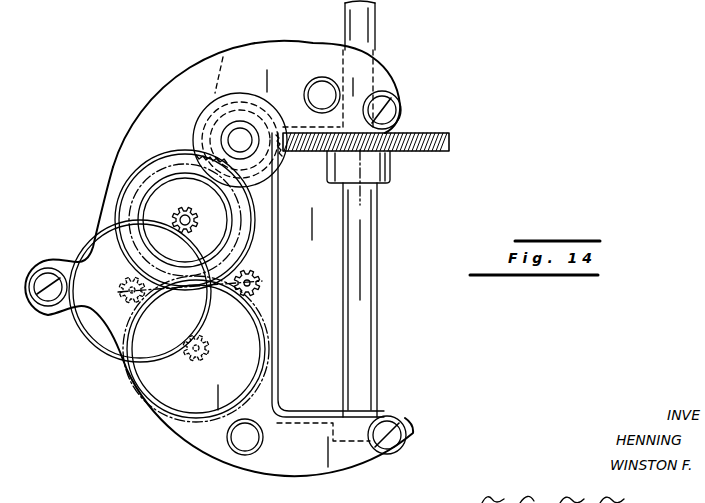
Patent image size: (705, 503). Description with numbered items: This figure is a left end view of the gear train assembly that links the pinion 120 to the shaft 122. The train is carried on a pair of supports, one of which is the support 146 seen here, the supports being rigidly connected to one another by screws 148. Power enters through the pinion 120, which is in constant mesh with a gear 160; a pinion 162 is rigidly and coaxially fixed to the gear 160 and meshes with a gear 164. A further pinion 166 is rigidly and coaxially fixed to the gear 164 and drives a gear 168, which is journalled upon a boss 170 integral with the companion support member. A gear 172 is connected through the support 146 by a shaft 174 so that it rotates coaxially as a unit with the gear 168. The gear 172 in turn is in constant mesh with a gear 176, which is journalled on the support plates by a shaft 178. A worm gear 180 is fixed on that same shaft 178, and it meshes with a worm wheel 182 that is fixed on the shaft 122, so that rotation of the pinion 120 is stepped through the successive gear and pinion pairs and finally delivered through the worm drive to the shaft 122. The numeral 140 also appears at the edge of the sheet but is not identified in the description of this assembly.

The pinion 120 is at (259, 298).
The shaft 122 is at (372, 238).
The housing 140 is at (141, 3).
The support 146 is at (288, 460).
The screws 148 is at (400, 108).
The gear 160 is at (265, 347).
The pinion 162 is at (208, 354).
The gear 164 is at (90, 352).
The pinion 166 is at (120, 291).
The gear 168 is at (270, 225).
The boss 170 is at (185, 220).
The gear 172 is at (143, 186).
The shaft 174 is at (186, 214).
The gear 176 is at (194, 131).
The shaft 178 is at (251, 126).
The worm gear 180 is at (240, 66).
The worm wheel 182 is at (452, 141).